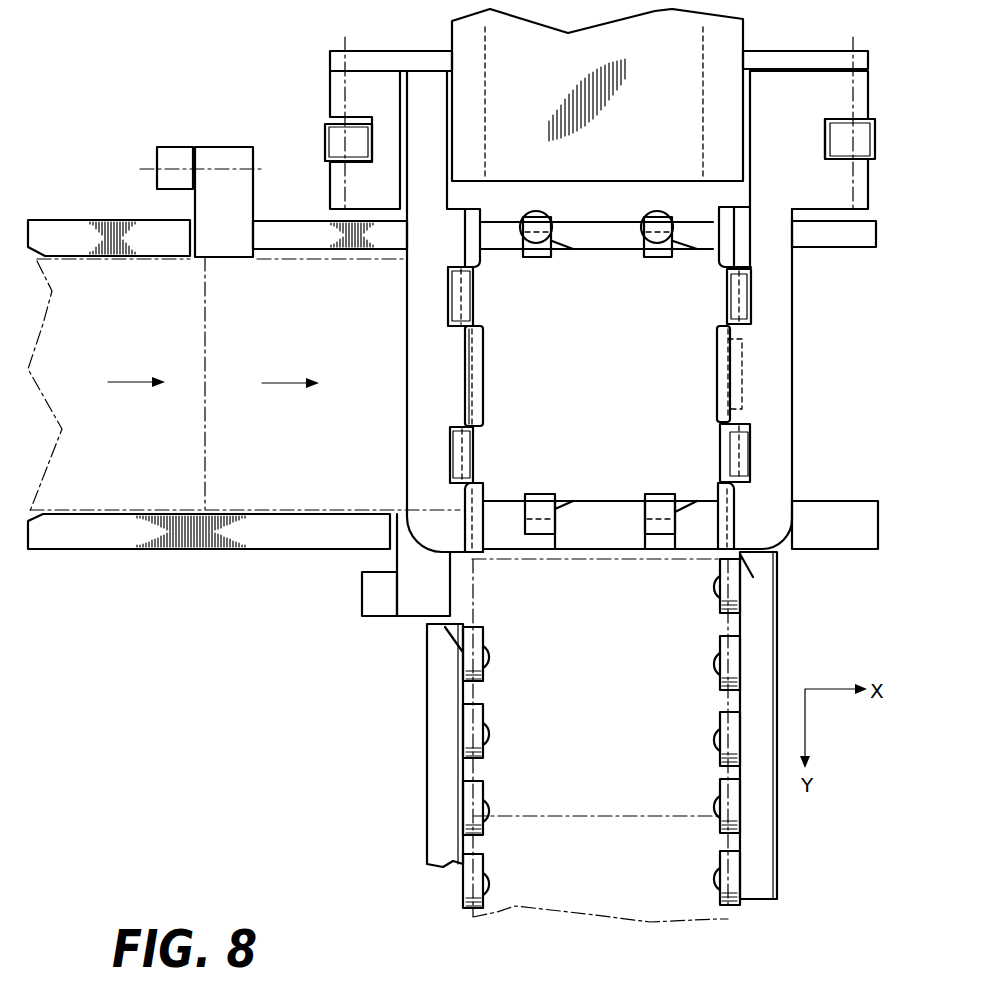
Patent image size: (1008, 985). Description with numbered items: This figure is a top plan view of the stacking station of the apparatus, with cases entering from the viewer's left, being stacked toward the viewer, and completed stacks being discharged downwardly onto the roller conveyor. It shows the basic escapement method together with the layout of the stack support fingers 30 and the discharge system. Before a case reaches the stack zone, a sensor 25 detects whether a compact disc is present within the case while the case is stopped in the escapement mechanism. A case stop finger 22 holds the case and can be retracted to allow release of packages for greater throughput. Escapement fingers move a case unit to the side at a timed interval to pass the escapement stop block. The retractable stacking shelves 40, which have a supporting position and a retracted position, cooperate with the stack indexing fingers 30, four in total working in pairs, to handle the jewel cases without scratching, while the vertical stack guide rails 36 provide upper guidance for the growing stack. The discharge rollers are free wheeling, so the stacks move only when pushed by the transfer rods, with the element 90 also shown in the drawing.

The case stop finger 22 is at (745, 380).
The sensor 25 is at (336, 292).
The stack indexing fingers 30 is at (675, 258).
The vertical stack guide rails 36 is at (453, 442).
The stacking shelves 40 is at (482, 264).
The ball joint 90 is at (673, 233).